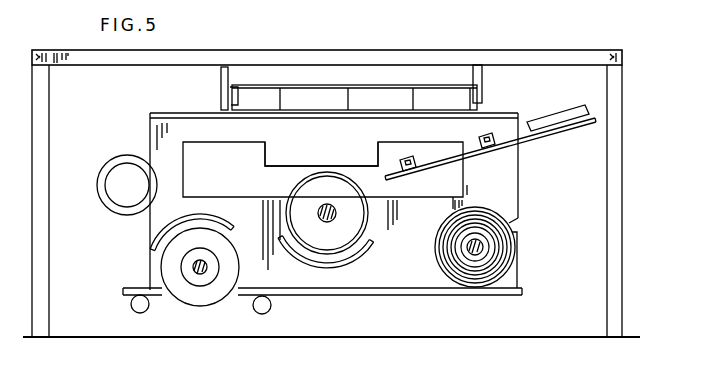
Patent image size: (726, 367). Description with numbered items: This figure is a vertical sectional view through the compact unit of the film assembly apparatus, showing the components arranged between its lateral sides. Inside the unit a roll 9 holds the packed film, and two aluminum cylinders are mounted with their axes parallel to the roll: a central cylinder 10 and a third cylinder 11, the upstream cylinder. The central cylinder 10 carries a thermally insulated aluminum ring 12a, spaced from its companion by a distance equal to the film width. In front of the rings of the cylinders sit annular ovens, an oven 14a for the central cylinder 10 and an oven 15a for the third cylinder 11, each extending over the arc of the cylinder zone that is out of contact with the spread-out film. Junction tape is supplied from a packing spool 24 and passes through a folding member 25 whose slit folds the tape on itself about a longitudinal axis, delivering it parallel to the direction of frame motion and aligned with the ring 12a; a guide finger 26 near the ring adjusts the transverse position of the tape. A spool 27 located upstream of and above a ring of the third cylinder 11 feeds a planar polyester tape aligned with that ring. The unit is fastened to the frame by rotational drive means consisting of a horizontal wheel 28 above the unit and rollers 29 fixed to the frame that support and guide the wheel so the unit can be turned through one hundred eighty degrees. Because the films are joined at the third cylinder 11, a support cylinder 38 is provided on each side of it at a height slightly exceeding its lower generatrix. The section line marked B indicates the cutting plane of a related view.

The roll 9 is at (490, 250).
The central cylinder 10 is at (340, 235).
The third cylinder 11 is at (218, 290).
The aluminum ring 12a is at (325, 172).
The annular oven 14a is at (337, 265).
The annular oven 15a is at (165, 237).
The packing spool 24 is at (567, 108).
The folding member 25 is at (495, 150).
The guide finger 26 is at (408, 166).
The spool 27 is at (118, 195).
The horizontal wheel 28 is at (295, 85).
The rollers 29 is at (225, 98).
The support cylinder 38 is at (133, 308).
The section line B is at (24, 125).